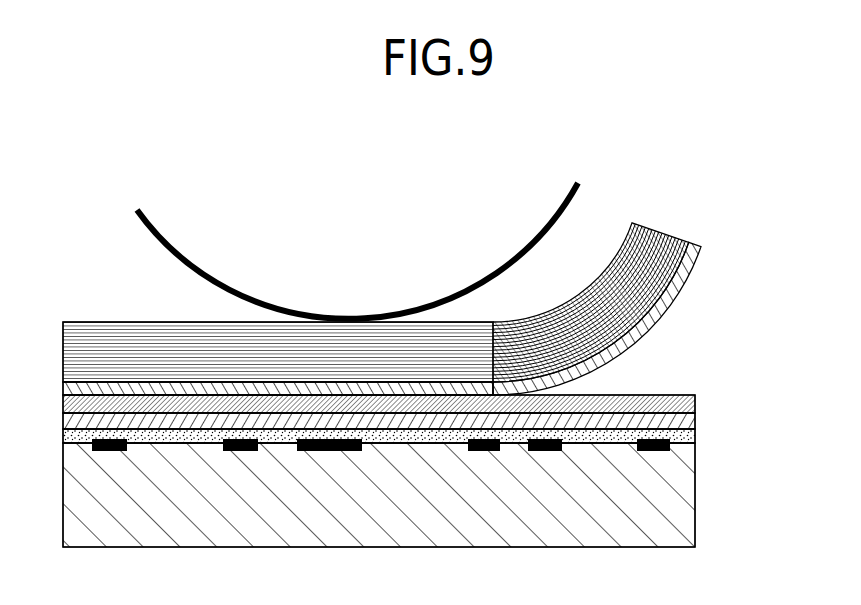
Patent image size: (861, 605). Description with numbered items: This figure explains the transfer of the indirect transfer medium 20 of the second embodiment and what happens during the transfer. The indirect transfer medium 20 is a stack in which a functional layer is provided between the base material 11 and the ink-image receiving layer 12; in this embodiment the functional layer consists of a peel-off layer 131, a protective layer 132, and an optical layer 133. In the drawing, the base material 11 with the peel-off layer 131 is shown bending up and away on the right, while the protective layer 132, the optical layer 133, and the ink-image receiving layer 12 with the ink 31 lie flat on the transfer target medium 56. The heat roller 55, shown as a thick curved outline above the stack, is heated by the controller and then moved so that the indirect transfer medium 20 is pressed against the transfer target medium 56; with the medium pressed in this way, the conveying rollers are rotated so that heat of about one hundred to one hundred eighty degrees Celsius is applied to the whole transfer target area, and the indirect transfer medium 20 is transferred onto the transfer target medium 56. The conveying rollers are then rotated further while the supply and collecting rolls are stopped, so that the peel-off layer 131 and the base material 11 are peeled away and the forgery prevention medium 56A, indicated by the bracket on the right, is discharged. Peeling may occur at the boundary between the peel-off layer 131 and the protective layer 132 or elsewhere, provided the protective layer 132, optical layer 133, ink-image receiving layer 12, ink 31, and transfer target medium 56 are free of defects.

The heat roller 55 is at (582, 186).
The base material 11 is at (665, 235).
The peel-off layer 131 is at (652, 327).
The protective layer 132 is at (695, 401).
The optical layer 133 is at (695, 421).
The ink-image receiving layer 12 is at (695, 437).
The ink 31 is at (655, 450).
The transfer target medium 56 is at (680, 530).
The forgery prevention medium 56A is at (778, 386).
The indirect transfer medium 20 is at (58, 320).